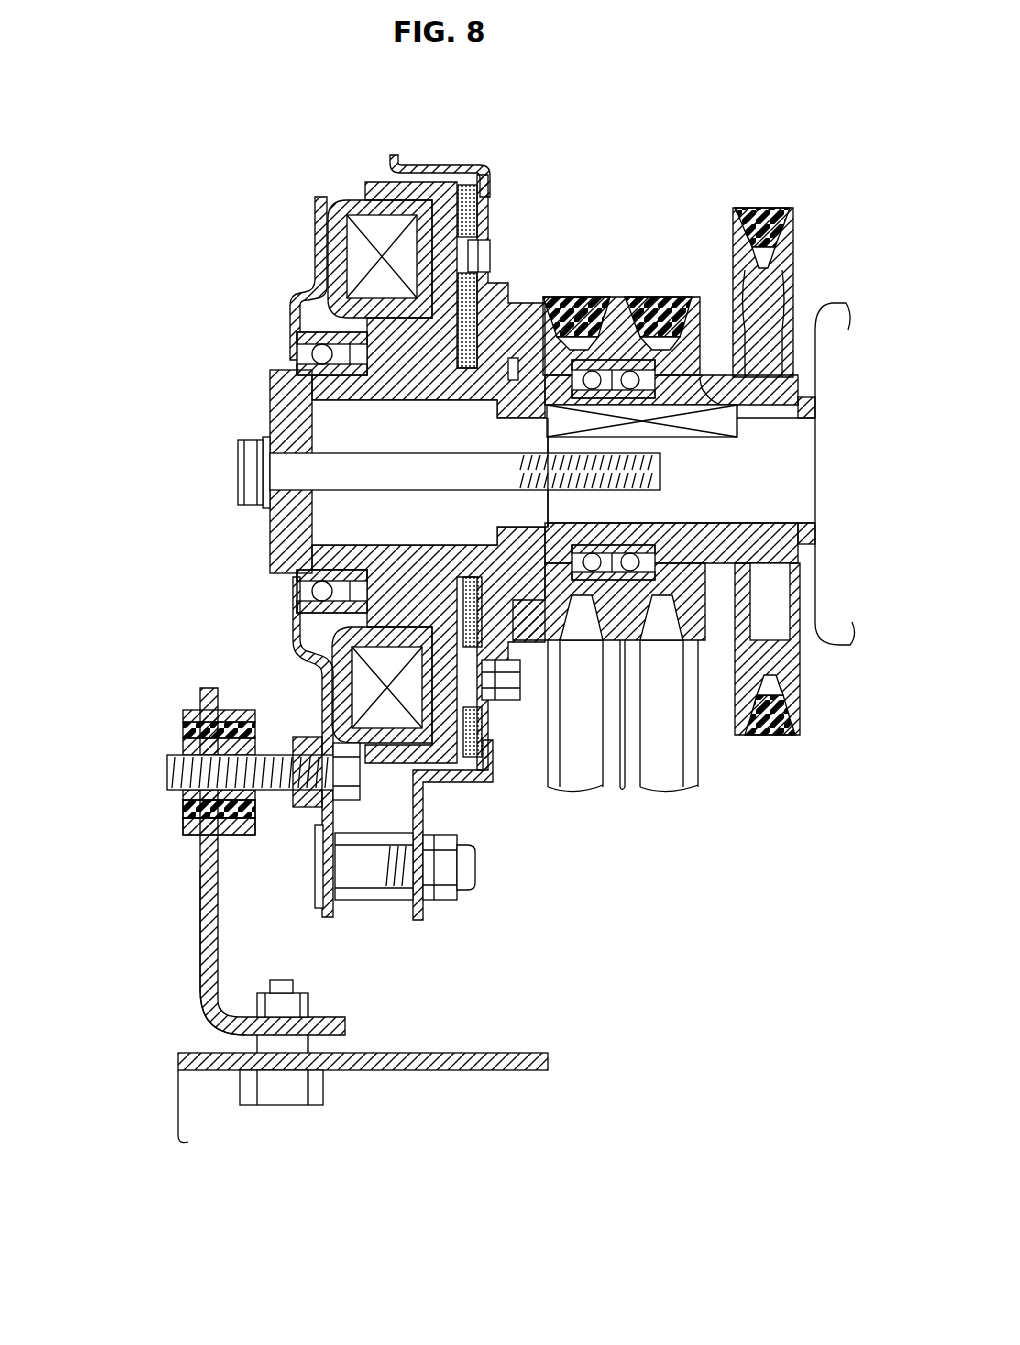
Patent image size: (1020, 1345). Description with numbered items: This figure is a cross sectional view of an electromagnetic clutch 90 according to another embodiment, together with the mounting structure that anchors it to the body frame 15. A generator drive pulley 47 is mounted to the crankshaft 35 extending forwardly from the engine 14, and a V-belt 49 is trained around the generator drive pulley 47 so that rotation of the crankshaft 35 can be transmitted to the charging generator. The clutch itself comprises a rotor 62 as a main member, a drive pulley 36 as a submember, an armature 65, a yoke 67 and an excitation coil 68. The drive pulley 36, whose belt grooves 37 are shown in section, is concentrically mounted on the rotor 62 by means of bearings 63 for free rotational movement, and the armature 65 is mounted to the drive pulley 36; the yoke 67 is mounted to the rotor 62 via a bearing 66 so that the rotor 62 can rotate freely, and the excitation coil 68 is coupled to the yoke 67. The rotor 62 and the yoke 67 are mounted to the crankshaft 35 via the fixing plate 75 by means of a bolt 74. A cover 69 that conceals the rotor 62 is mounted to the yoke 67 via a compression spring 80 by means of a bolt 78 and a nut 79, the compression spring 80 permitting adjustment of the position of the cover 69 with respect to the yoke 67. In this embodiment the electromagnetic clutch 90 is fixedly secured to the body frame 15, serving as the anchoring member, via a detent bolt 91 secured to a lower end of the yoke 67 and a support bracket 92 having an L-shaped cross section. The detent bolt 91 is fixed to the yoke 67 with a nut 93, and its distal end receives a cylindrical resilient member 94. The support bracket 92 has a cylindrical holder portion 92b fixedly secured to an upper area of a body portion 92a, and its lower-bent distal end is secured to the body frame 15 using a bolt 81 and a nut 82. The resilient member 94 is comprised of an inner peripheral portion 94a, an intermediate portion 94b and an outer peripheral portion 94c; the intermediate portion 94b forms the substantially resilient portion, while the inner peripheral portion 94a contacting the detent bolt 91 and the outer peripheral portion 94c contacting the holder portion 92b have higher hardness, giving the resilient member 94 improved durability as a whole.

The electromagnetic clutch 90 is at (241, 113).
The rotor 62 is at (383, 181).
The excitation coil 68 is at (385, 237).
The yoke 67 is at (315, 227).
The armature 65 is at (472, 212).
The bearing 66 is at (312, 335).
The fixing plate 75 is at (273, 393).
The bolt 74 is at (243, 458).
The drive pulley 36 is at (527, 292).
The belt grooves 37 is at (572, 295).
The bearings 63 is at (597, 360).
The V-belt 49 is at (758, 208).
The generator drive pulley 47 is at (797, 262).
The engine 14 is at (841, 285).
The crankshaft 35 is at (772, 491).
The cover 69 is at (493, 763).
The support bracket 92 is at (194, 675).
The body portion 92a is at (223, 867).
The holder portion 92b is at (238, 710).
The nut 93 is at (292, 724).
The resilient member 94 is at (93, 750).
The inner peripheral portion 94a is at (183, 792).
The intermediate portion 94b is at (183, 808).
The outer peripheral portion 94c is at (190, 838).
The detent bolt 91 is at (363, 778).
The bolt 78 is at (475, 870).
The nut 79 is at (443, 902).
The compression spring 80 is at (373, 905).
The nut 82 is at (313, 1003).
The bolt 81 is at (280, 1106).
The body frame 15 is at (524, 1062).